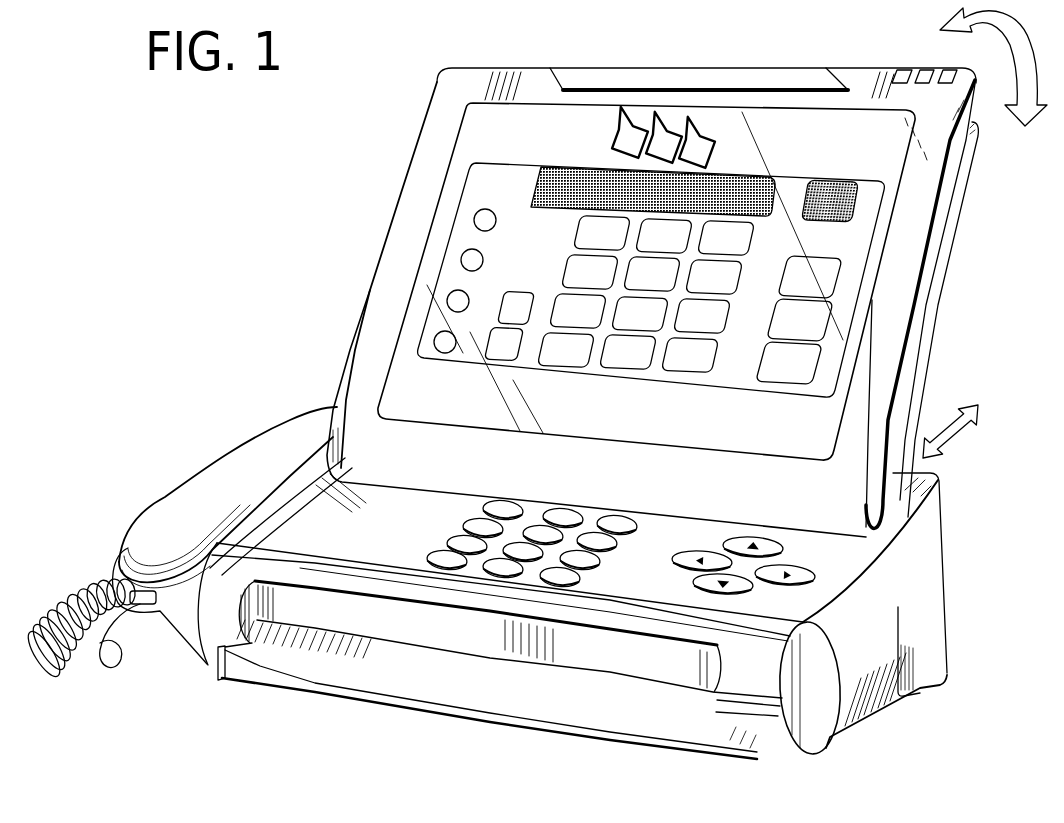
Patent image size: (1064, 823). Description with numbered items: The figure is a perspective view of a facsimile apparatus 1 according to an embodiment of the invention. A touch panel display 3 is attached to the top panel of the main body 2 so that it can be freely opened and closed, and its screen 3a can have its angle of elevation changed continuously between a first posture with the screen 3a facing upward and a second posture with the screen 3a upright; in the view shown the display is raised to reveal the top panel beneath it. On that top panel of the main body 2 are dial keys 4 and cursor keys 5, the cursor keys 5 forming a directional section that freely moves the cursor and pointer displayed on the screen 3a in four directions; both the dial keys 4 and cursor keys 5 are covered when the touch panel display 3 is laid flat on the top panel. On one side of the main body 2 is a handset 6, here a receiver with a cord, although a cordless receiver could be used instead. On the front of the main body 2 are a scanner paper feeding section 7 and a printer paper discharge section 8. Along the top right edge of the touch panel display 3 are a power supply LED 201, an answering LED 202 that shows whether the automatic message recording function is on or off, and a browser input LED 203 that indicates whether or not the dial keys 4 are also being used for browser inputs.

The facsimile apparatus 1 is at (200, 221).
The main body 2 is at (930, 595).
The touch panel display 3 is at (841, 90).
The screen 3a is at (480, 140).
The dial keys 4 is at (440, 530).
The cursor keys 5 is at (792, 558).
The handset 6 is at (213, 477).
The scanner paper feeding section 7 is at (380, 600).
The printer paper discharge section 8 is at (503, 660).
The power supply LED 201 is at (897, 73).
The answering LED 202 is at (923, 73).
The browser input LED 203 is at (985, 57).